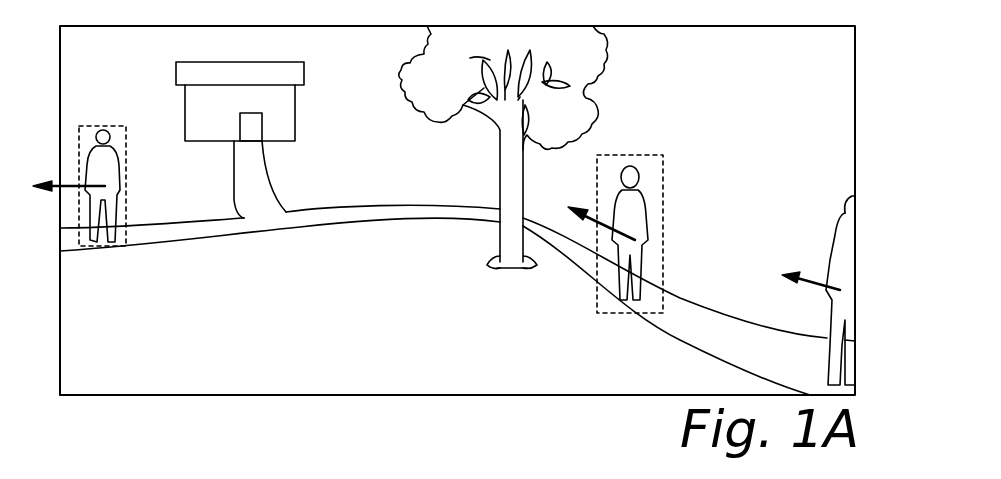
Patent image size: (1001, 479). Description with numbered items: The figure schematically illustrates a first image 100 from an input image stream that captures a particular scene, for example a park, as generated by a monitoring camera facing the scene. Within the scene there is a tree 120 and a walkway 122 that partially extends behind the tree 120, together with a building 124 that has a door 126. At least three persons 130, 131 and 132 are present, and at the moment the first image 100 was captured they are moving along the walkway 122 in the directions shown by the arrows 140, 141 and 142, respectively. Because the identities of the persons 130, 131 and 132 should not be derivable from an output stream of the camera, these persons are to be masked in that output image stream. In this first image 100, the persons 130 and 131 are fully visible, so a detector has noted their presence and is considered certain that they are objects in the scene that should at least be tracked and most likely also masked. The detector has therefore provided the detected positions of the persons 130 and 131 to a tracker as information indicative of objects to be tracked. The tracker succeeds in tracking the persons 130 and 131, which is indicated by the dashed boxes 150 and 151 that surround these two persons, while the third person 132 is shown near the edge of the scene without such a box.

The first image 100 is at (135, 395).
The tree 120 is at (512, 178).
The walkway 122 is at (323, 218).
The building 124 is at (283, 100).
The door 126 is at (255, 127).
The person 130 is at (640, 188).
The person 131 is at (113, 178).
The person 132 is at (843, 237).
The arrow 140 is at (595, 222).
The arrow 141 is at (73, 186).
The arrow 142 is at (807, 293).
The dashed box 150 is at (663, 245).
The dashed box 151 is at (120, 247).